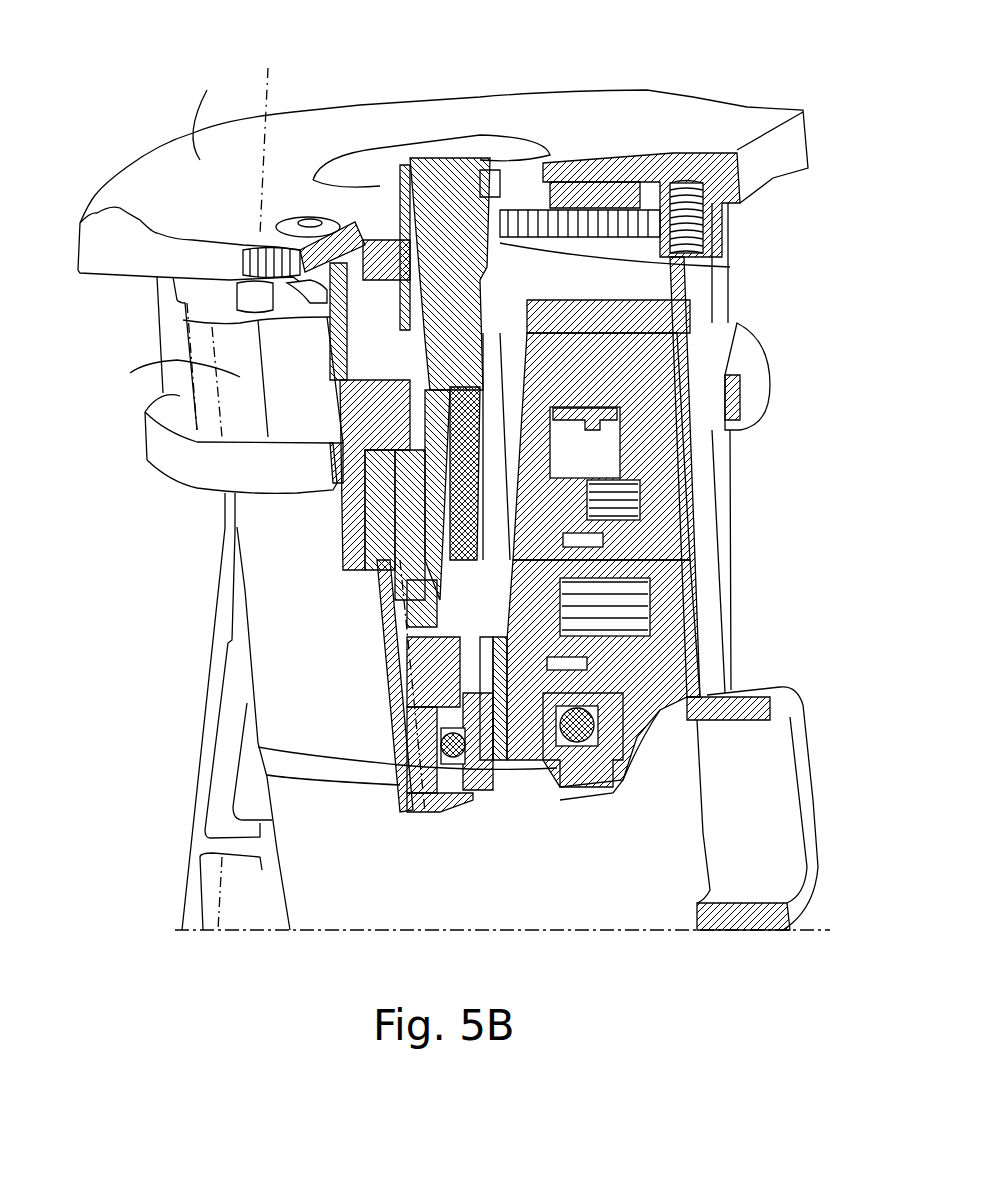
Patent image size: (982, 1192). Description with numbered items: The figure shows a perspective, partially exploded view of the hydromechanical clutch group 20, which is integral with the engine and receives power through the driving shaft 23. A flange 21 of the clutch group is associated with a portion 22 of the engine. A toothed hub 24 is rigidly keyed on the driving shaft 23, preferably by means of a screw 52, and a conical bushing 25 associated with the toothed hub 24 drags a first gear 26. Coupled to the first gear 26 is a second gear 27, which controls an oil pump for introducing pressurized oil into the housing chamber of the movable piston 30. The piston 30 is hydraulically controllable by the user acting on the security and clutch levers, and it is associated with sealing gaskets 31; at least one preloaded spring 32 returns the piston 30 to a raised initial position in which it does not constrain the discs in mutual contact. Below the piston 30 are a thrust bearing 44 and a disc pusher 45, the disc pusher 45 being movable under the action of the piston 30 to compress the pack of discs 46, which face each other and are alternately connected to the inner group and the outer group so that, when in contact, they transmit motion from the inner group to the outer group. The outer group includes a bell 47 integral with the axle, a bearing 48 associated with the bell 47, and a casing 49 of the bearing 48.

The hydromechanical clutch group 20 is at (172, 530).
The flange 21 is at (240, 375).
The portion of the engine 22 is at (207, 90).
The driving shaft 23 is at (430, 190).
The toothed hub 24 is at (390, 632).
The conical bushing 25 is at (500, 300).
The first gear 26 is at (522, 240).
The second gear 27 is at (269, 138).
The movable piston 30 is at (377, 554).
The sealing gaskets 31 is at (392, 474).
The preloaded spring 32 is at (380, 590).
The thrust bearing 44 is at (630, 562).
The disc pusher 45 is at (390, 662).
The pack of discs 46 is at (667, 628).
The bell 47 is at (430, 745).
The bearing 48 is at (557, 740).
The casing 49 is at (460, 810).
The screw 52 is at (483, 476).